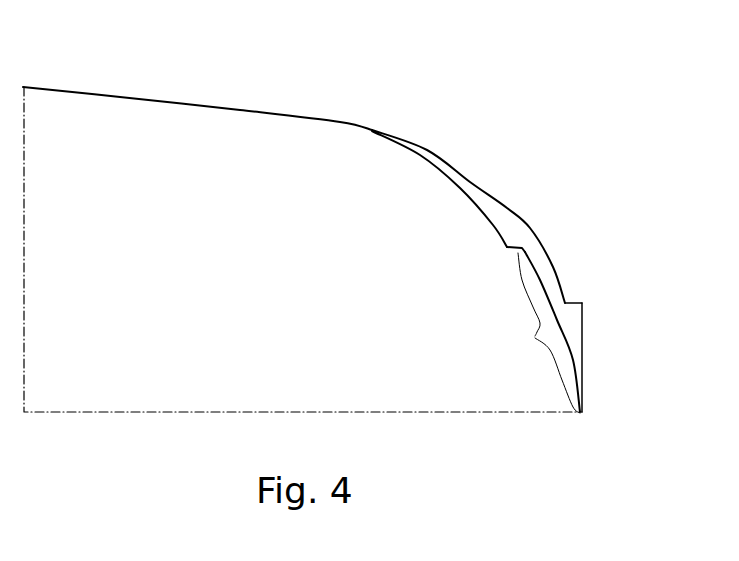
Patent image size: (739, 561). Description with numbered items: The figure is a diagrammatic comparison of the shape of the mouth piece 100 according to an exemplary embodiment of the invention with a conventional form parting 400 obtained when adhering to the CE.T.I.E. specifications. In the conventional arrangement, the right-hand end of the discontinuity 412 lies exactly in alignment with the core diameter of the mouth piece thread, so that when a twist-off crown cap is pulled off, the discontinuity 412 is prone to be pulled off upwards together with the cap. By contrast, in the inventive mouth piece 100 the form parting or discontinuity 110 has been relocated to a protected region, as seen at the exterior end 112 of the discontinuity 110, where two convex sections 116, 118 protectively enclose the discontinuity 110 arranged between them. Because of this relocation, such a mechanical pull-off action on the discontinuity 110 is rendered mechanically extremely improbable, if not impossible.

The mouth piece 100 is at (48, 85).
The discontinuity 110 is at (510, 255).
The exterior end of the discontinuity 112 is at (523, 248).
The convex section 116 is at (537, 333).
The convex section 118 is at (370, 133).
The conventional form parting 400 is at (582, 295).
The conventional discontinuity 412 is at (583, 307).